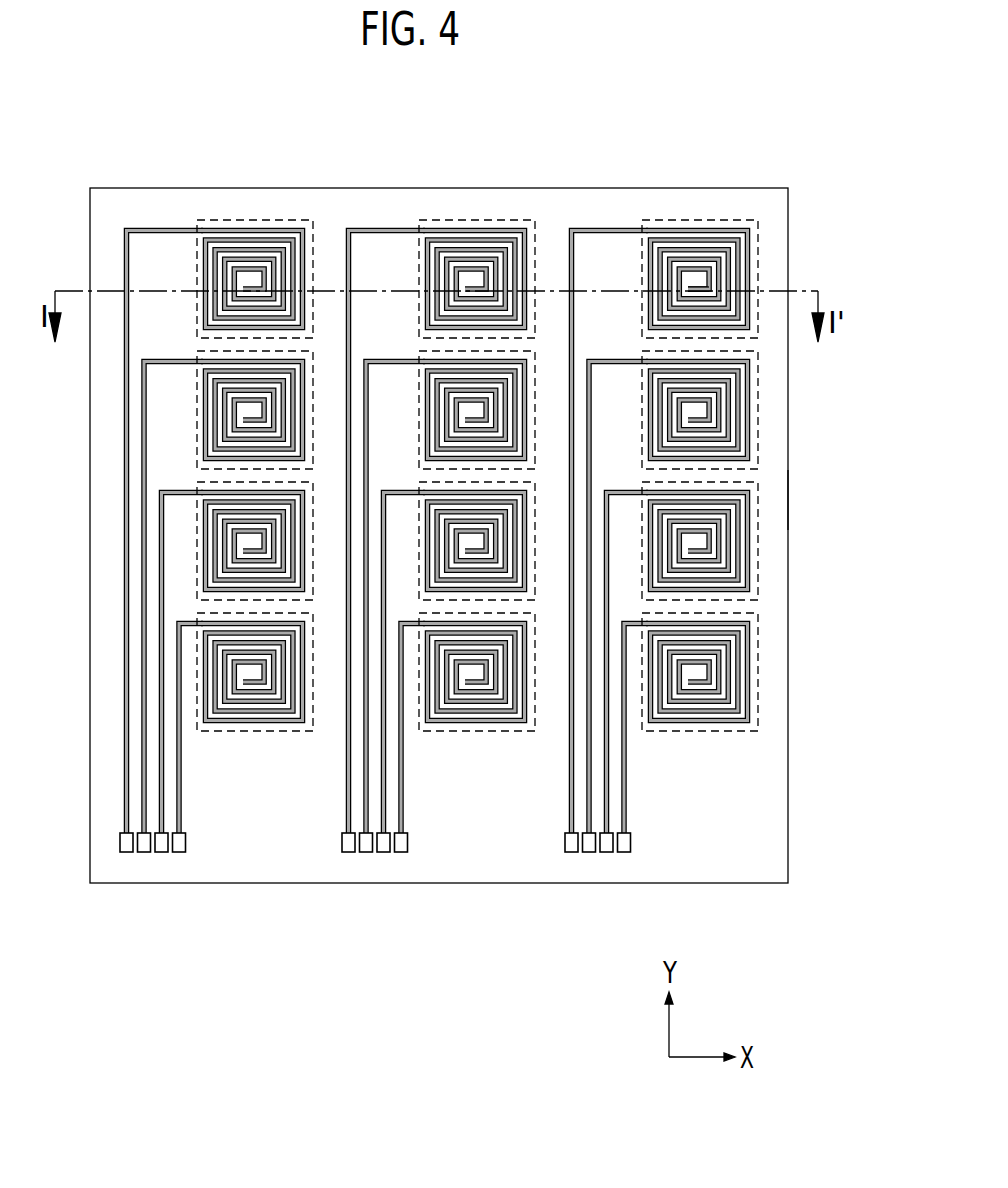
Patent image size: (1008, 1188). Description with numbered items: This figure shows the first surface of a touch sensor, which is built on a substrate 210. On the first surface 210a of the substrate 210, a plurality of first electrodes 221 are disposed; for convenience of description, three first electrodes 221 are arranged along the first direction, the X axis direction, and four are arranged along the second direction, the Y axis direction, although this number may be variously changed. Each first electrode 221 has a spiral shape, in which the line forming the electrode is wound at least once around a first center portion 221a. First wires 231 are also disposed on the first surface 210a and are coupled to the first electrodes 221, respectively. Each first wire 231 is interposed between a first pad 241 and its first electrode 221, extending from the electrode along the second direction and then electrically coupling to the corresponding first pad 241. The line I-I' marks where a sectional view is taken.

The substrate 210 is at (788, 392).
The first surface 210a is at (778, 500).
The first electrode 221 is at (687, 220).
The first center portion 221a is at (700, 289).
The first wire 231 is at (607, 227).
The first pad 241 is at (587, 852).